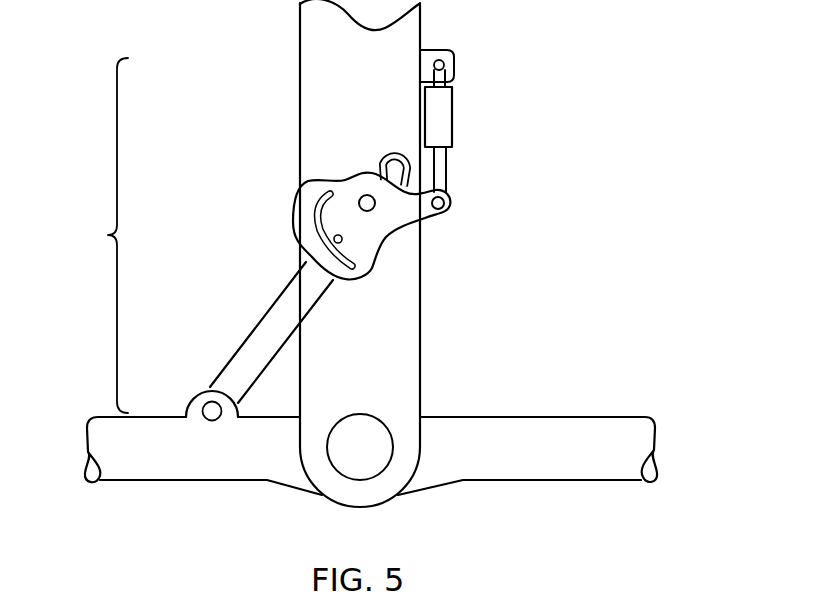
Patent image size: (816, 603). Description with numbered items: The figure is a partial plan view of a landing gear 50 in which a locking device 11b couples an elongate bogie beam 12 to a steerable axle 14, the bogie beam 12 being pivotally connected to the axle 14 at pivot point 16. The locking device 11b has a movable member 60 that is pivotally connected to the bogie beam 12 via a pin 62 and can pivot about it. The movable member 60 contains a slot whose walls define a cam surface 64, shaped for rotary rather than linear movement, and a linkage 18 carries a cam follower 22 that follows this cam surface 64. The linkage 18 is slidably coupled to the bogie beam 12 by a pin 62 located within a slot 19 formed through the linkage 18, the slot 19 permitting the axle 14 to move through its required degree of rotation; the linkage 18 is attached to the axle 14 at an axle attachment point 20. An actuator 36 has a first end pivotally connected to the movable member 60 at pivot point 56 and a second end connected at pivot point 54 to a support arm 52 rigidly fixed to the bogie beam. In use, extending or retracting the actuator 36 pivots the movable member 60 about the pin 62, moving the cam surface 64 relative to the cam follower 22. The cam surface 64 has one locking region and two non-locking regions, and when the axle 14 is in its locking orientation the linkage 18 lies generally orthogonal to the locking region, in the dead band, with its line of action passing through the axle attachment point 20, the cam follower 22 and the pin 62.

The locking device 11b is at (108, 235).
The bogie beam 12 is at (392, 97).
The axle 14 is at (490, 463).
The pivot point 16 is at (357, 445).
The linkage 18 is at (248, 346).
The slot 19 is at (393, 170).
The axle attachment point 20 is at (214, 411).
The cam follower 22 is at (335, 240).
The actuator 36 is at (453, 120).
The landing gear 50 is at (648, 92).
The support arm 52 is at (437, 50).
The pivot point 54 is at (444, 64).
The pivot point 56 is at (444, 205).
The movable member 60 is at (410, 212).
The pin 62 is at (376, 208).
The cam surface 64 is at (317, 208).